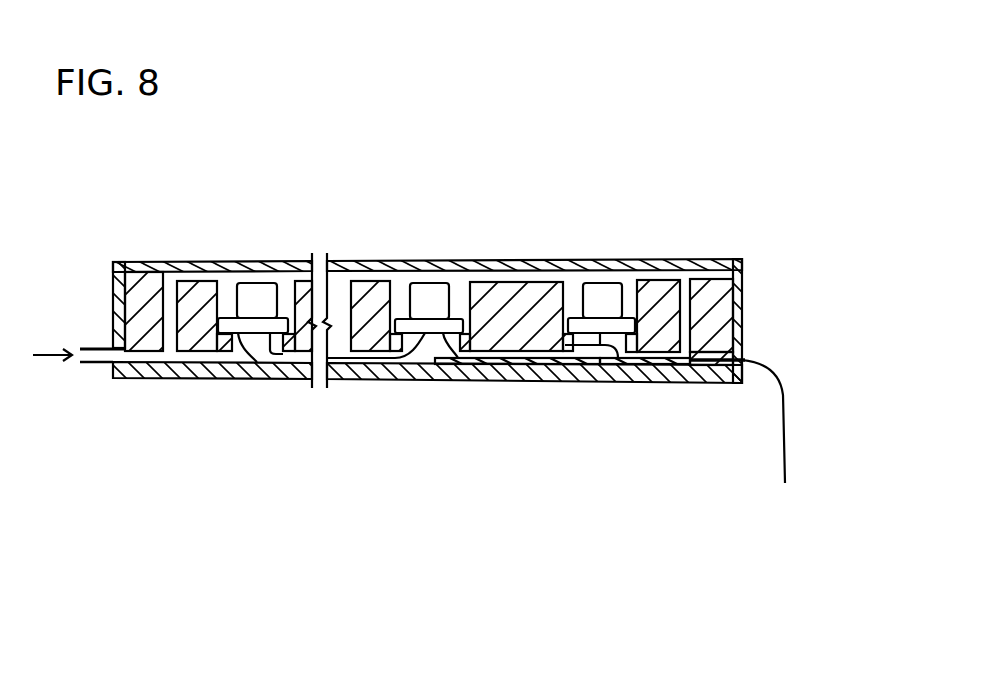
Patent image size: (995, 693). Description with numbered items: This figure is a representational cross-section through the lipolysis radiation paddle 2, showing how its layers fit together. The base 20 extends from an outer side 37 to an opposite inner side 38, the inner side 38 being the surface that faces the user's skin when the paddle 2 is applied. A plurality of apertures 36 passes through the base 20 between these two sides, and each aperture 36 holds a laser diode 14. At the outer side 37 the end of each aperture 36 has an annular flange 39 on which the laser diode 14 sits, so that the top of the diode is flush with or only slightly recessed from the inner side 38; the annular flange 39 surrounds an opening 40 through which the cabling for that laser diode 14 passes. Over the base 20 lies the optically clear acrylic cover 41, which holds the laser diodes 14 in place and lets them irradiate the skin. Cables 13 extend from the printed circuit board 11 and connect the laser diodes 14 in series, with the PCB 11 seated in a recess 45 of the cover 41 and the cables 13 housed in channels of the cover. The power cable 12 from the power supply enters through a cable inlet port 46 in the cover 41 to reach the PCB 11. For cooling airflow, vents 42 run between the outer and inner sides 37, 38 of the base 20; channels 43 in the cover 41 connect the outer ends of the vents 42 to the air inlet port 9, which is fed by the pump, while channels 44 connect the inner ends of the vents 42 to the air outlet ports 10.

The lipolysis radiation paddle 2 is at (211, 486).
The air inlet port 9 is at (108, 370).
The air outlet port 10 is at (748, 272).
The printed circuit board 11 is at (525, 383).
The power cable 12 is at (789, 434).
The cable 13 is at (262, 380).
The laser diode 14 is at (259, 262).
The base 20 is at (509, 284).
The aperture 36 is at (228, 262).
The outer side 37 is at (469, 384).
The inner side 38 is at (545, 260).
The annular flange 39 is at (248, 362).
The opening 40 is at (428, 340).
The cover 41 is at (675, 384).
The vent 42 is at (160, 310).
The channel 43 is at (200, 351).
The channel 44 is at (655, 260).
The recess 45 is at (630, 382).
The cable inlet port 46 is at (708, 384).